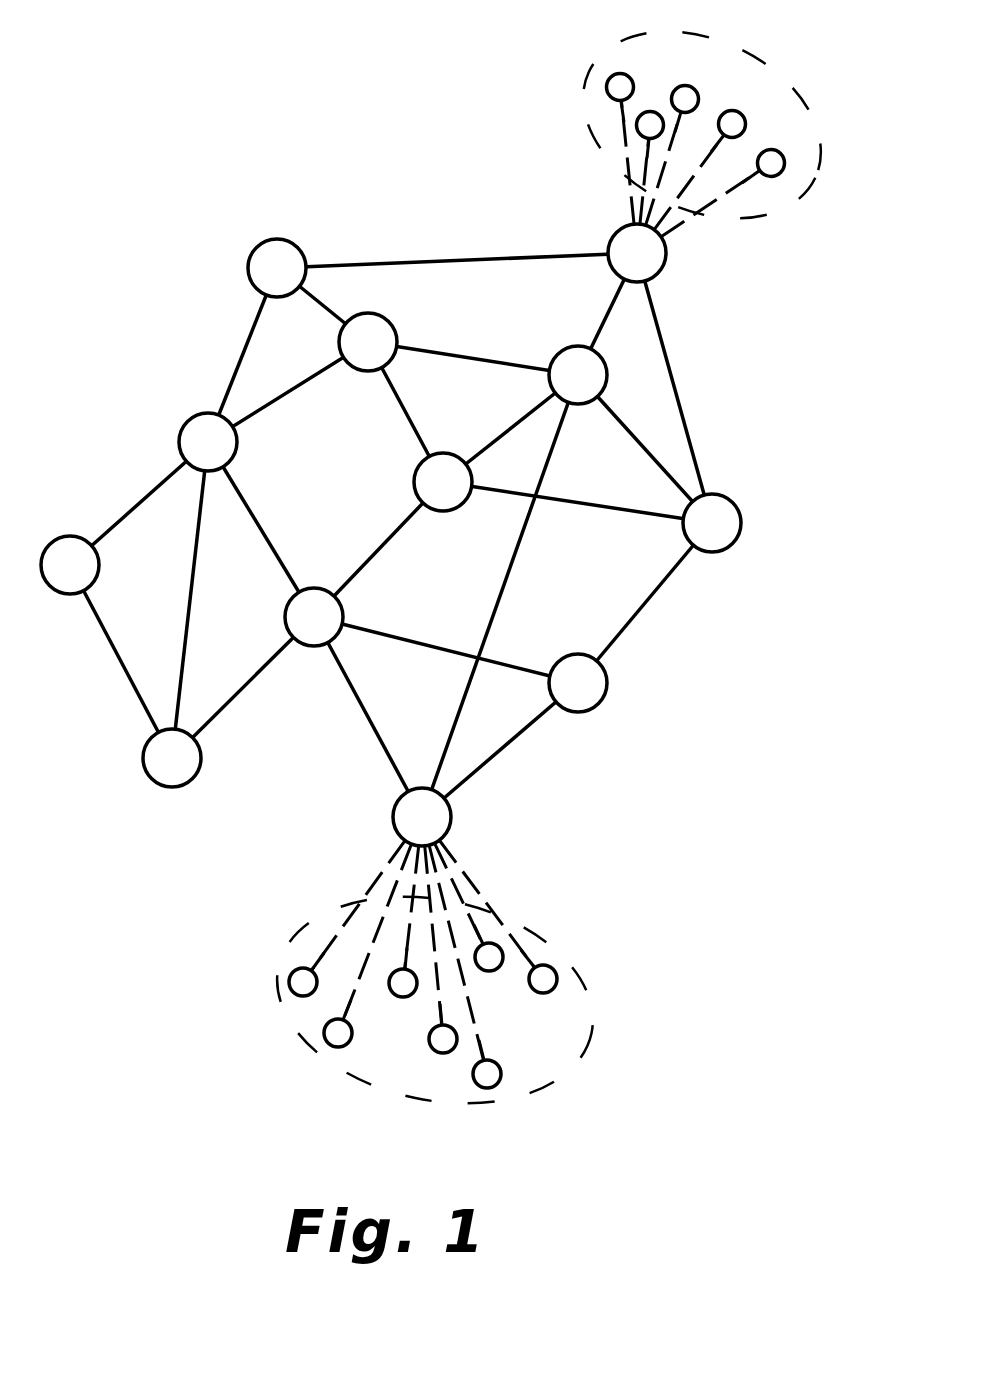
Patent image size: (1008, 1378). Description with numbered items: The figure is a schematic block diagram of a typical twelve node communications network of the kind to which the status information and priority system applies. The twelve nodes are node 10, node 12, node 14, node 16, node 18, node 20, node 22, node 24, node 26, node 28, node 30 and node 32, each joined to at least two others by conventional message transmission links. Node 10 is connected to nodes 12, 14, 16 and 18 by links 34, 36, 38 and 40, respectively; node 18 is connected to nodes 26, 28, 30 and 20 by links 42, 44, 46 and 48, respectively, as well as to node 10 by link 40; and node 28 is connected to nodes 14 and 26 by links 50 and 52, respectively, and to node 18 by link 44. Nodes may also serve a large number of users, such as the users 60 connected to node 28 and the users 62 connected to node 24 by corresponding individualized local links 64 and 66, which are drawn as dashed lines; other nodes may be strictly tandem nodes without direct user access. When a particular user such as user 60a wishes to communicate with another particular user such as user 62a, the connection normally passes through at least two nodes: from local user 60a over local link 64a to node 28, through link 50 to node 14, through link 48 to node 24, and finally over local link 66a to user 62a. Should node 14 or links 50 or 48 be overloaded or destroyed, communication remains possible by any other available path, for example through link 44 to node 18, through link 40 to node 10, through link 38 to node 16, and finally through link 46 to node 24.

The node 10 is at (478, 437).
The node 12 is at (452, 312).
The node 14 is at (600, 396).
The node 16 is at (780, 550).
The node 18 is at (341, 611).
The node 20 is at (267, 465).
The node 22 is at (348, 228).
The node 24 is at (665, 266).
The node 26 is at (640, 700).
The node 28 is at (451, 817).
The node 30 is at (198, 770).
The node 32 is at (130, 580).
The link 34 is at (455, 362).
The link 36 is at (478, 456).
The link 38 is at (518, 500).
The link 40 is at (370, 561).
The link 42 is at (455, 657).
The link 44 is at (350, 717).
The link 46 is at (745, 348).
The link 48 is at (610, 300).
The link 50 is at (497, 605).
The link 52 is at (525, 728).
The users 60 is at (650, 1010).
The user 60a is at (490, 1088).
The users 62 is at (878, 65).
The user 62a is at (687, 20).
The local links 64 is at (517, 937).
The local link 64a is at (480, 1053).
The local links 66 is at (745, 182).
The local link 66a is at (623, 127).